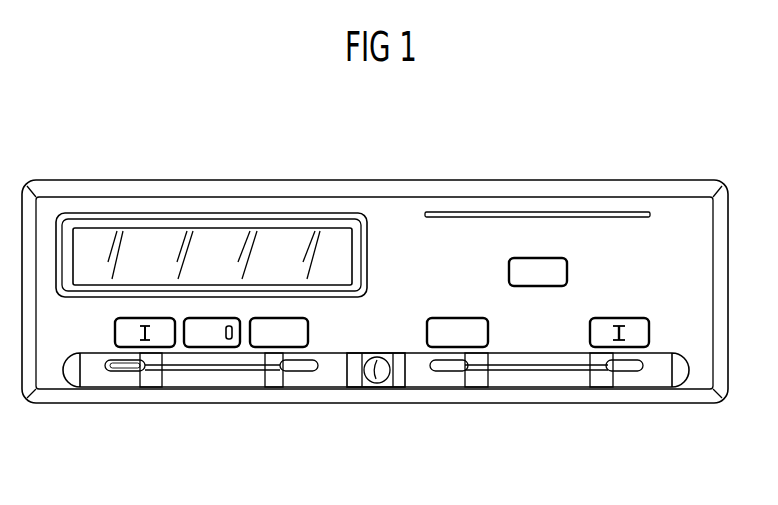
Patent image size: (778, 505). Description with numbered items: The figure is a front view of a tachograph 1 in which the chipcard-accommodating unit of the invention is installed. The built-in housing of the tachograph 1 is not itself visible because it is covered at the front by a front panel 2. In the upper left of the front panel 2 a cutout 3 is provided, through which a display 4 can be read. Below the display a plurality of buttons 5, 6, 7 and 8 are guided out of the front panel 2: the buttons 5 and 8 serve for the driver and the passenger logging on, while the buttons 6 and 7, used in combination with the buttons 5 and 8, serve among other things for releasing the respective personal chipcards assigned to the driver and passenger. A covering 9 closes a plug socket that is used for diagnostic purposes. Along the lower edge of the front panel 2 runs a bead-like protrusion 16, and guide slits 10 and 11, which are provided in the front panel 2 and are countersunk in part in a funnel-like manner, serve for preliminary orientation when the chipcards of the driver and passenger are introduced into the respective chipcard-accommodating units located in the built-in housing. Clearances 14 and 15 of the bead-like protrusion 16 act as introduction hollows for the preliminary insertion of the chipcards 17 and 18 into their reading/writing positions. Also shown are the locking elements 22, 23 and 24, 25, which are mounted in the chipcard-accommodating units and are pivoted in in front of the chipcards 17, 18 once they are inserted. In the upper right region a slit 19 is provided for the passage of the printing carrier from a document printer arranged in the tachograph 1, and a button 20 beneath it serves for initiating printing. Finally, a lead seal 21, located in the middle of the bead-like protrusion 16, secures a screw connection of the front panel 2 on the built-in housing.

The tachograph 1 is at (678, 166).
The front panel 2 is at (231, 203).
The cutout 3 is at (137, 240).
The display 4 is at (205, 263).
The button 5 is at (123, 333).
The button 6 is at (300, 329).
The button 7 is at (452, 331).
The button 8 is at (632, 331).
The covering 9 is at (197, 333).
The guide slit 10 is at (277, 381).
The guide slit 11 is at (578, 373).
The clearance 14 is at (150, 381).
The clearance 15 is at (478, 378).
The bead-like protrusion 16 is at (665, 378).
The chipcard 17 is at (233, 373).
The chipcard 18 is at (547, 373).
The slit 19 is at (478, 211).
The button 20 is at (548, 277).
The lead seal 21 is at (377, 381).
The locking element 22 is at (117, 371).
The locking element 23 is at (311, 377).
The locking element 24 is at (440, 371).
The locking element 25 is at (637, 372).